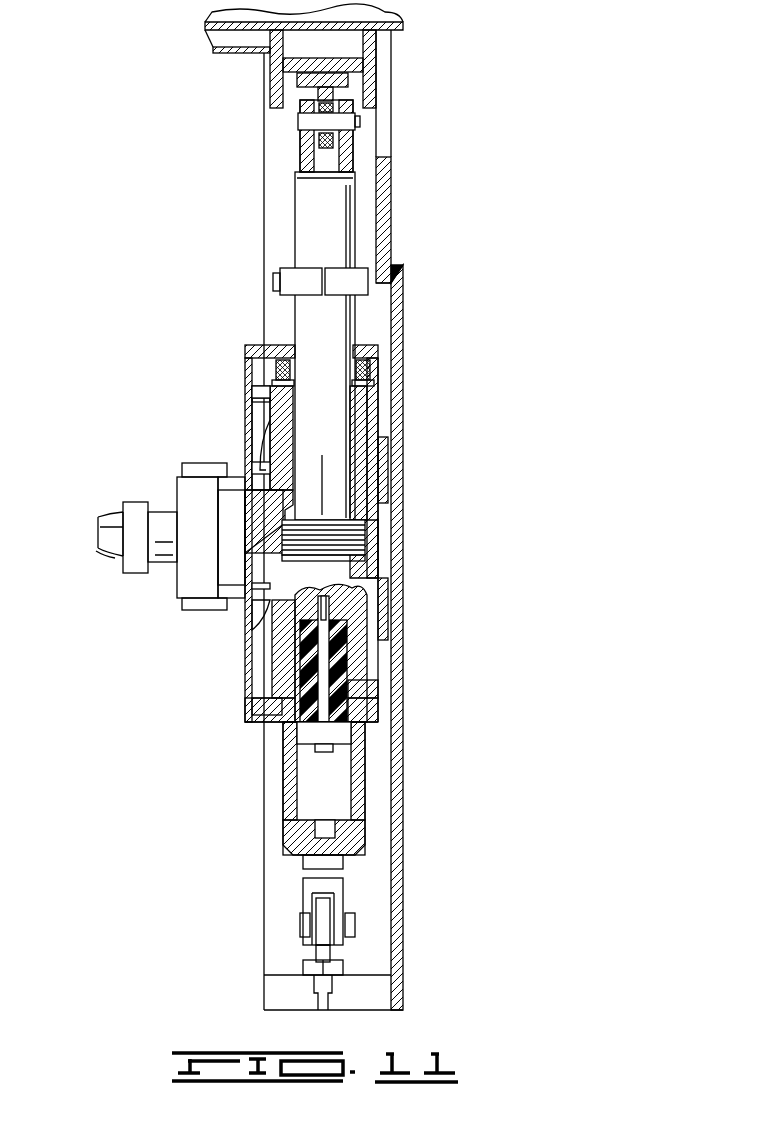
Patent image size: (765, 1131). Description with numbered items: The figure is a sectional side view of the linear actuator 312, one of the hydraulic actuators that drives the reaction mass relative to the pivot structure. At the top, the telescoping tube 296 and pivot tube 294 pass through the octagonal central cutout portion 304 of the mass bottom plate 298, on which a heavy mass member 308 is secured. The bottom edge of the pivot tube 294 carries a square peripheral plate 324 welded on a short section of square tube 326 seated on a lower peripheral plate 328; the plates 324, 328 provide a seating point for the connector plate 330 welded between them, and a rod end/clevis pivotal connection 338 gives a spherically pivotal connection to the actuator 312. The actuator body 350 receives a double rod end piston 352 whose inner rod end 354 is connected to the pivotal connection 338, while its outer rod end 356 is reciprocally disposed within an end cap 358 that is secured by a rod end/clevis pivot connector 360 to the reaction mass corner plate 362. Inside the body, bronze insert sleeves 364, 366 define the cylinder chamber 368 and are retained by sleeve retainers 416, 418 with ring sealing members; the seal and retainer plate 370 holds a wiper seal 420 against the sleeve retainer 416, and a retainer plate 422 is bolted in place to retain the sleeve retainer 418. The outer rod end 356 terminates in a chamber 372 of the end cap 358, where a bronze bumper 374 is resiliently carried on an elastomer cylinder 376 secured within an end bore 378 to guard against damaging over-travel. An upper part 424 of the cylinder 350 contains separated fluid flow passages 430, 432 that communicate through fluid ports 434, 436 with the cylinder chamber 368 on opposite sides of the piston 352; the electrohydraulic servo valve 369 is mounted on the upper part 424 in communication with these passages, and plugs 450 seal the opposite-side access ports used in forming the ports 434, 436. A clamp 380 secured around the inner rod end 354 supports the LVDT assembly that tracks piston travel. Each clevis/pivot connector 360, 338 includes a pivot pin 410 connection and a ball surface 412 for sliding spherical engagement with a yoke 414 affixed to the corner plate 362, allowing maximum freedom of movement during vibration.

The telescoping tube 296 is at (215, 23).
The pivot tube 294 is at (213, 50).
The square peripheral plate 324 is at (270, 86).
The lower peripheral plate 328 is at (370, 63).
The short section of square tube 326 is at (348, 86).
The connector plate 330 is at (342, 88).
The rod end/clevis pivotal connection 338 is at (300, 145).
The octagonal central cutout portion 304 is at (380, 162).
The mass bottom plate 298 is at (385, 216).
The heavy mass member 308 is at (397, 786).
The inner rod end 354 is at (300, 231).
The double rod end piston 352 is at (345, 552).
The clamp 380 is at (288, 272).
The wiper seal 420 is at (272, 345).
The seal and retainer plate 370 is at (378, 352).
The sleeve retainer 416 is at (375, 384).
The bronze insert sleeve 364 is at (358, 422).
The fluid port 434 is at (253, 432).
The fluid flow passage 430 is at (258, 470).
The plug 450 is at (387, 470).
The cylinder chamber 368 is at (368, 503).
The actuator body 350 is at (372, 527).
The bronze insert sleeve 366 is at (362, 656).
The outer rod end 356 is at (348, 607).
The elastomer cylinder 376 is at (370, 688).
The retainer plate 422 is at (370, 712).
The fluid flow passage 432 is at (258, 592).
The fluid port 436 is at (260, 630).
The sleeve retainer 418 is at (300, 706).
The end bore 378 is at (275, 722).
The chamber 372 is at (297, 782).
The bronze bumper 374 is at (335, 736).
The end cap 358 is at (355, 836).
The rod end/clevis pivot connector 360 is at (303, 899).
The pivot pin 410 is at (300, 926).
The ball surface 412 is at (340, 918).
The yoke 414 is at (325, 957).
The reaction mass corner plate 362 is at (278, 991).
The linear actuator 312 is at (158, 491).
The electrohydraulic servo valve 369 is at (190, 485).
The upper part of cylinder 424 is at (250, 532).